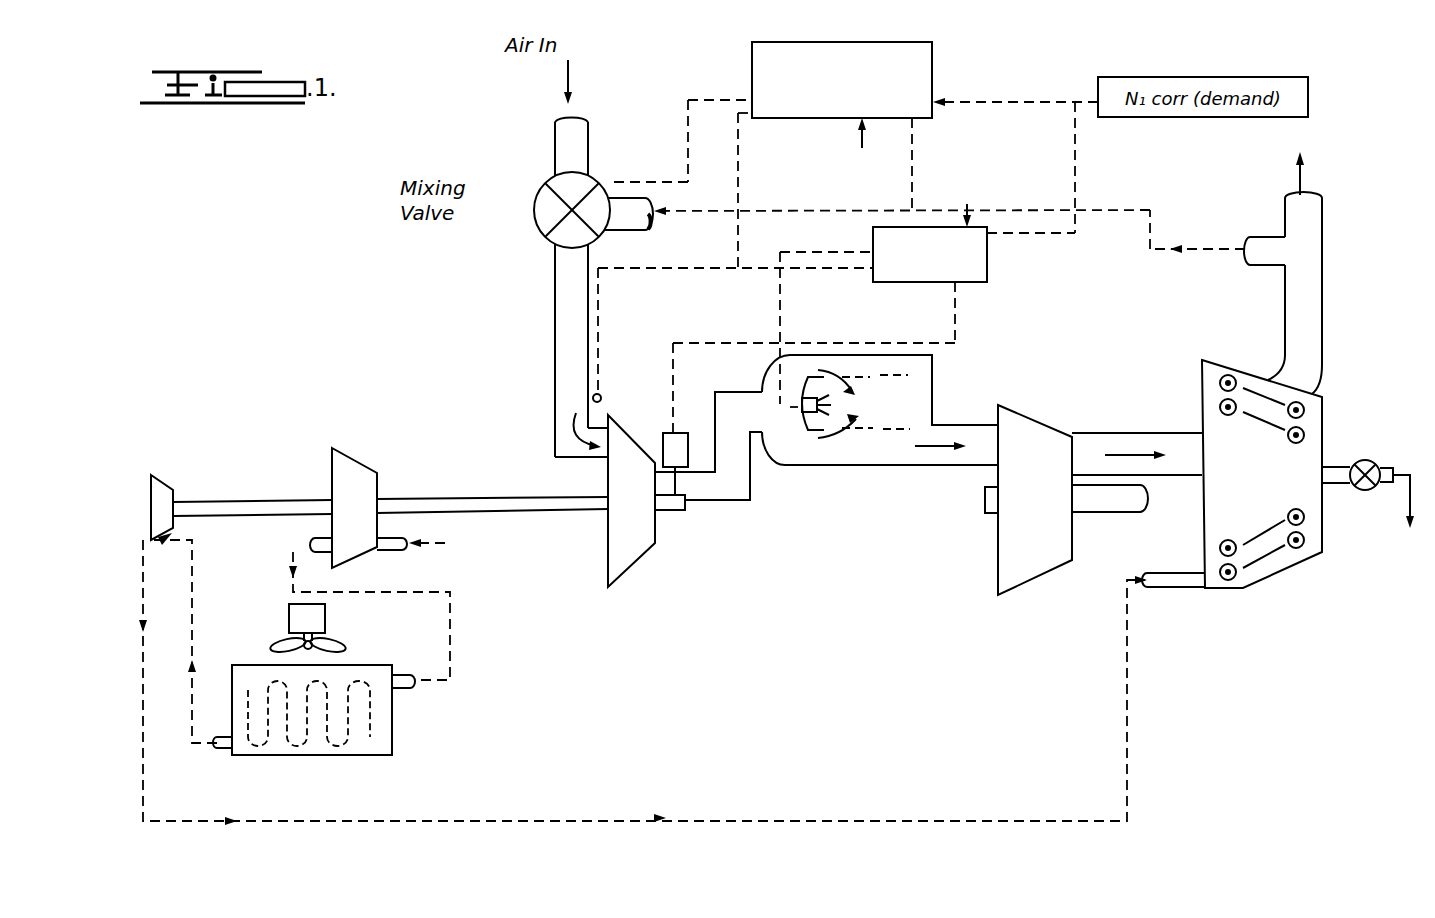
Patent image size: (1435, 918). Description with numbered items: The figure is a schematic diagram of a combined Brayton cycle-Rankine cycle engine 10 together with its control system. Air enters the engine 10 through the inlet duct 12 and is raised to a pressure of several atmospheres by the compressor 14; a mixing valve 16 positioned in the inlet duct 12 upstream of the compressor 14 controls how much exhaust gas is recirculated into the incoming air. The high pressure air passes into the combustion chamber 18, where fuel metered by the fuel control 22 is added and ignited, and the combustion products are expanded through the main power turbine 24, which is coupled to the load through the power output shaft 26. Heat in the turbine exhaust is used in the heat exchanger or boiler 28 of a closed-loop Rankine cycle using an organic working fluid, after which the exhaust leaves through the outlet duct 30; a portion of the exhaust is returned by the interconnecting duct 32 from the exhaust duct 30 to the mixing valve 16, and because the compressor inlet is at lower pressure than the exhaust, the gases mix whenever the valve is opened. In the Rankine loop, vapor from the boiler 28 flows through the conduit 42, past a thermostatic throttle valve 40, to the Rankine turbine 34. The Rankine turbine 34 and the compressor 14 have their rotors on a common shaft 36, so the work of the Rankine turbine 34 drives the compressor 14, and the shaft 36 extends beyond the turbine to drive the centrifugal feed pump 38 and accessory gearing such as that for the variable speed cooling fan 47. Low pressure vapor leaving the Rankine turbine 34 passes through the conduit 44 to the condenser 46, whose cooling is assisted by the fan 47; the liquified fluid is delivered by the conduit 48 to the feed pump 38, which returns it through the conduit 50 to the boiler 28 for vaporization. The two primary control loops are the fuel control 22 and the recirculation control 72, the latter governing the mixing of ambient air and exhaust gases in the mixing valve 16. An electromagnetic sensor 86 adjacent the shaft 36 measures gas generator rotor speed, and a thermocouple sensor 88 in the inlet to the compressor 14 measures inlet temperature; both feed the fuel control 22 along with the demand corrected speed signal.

The engine 10 is at (480, 320).
The inlet duct 12 is at (553, 128).
The compressor 14 is at (632, 568).
The mixing valve 16 is at (541, 231).
The combustion chamber 18 is at (777, 468).
The fuel control 22 is at (987, 275).
The main power turbine 24 is at (998, 553).
The output shaft 26 is at (1147, 497).
The heat exchanger (boiler) 28 is at (1202, 393).
The outlet duct 30 is at (1285, 306).
The duct 32 is at (634, 232).
The Rankine turbine 34 is at (377, 475).
The common shaft 36 is at (502, 497).
The centrifugal feed pump 38 is at (173, 490).
The thermostatic throttle valve 40 is at (1372, 462).
The conduit 42 is at (1340, 465).
The conduit 44 is at (313, 541).
The condenser 46 is at (232, 757).
The cooling fan 47 is at (289, 623).
The conduit 48 is at (216, 749).
The conduit 50 is at (162, 632).
The recirculation control 72 is at (932, 42).
The electromagnetic sensor 86 is at (681, 433).
The thermocouple sensor 88 is at (603, 394).